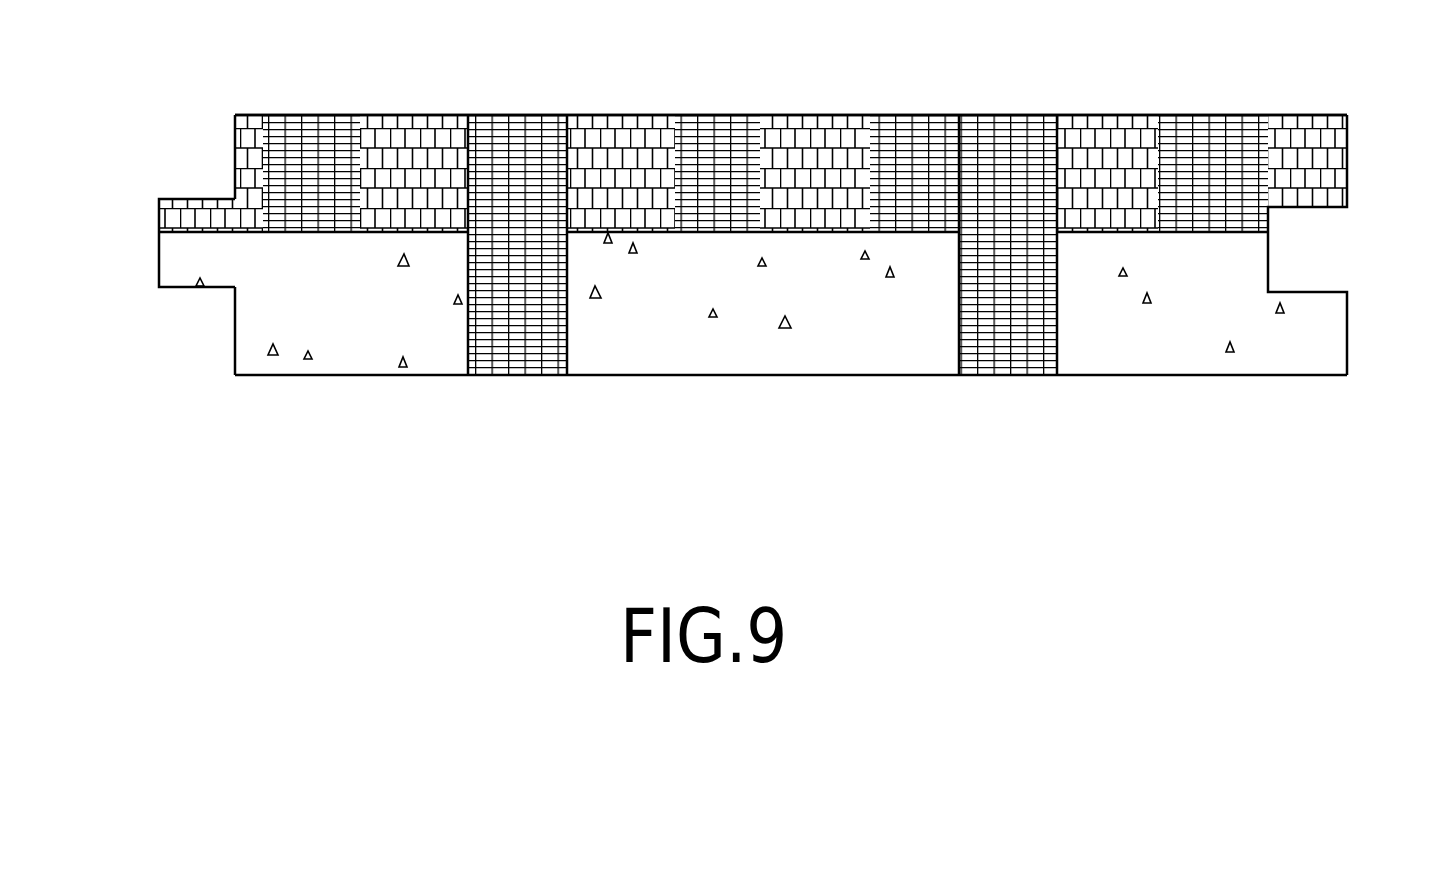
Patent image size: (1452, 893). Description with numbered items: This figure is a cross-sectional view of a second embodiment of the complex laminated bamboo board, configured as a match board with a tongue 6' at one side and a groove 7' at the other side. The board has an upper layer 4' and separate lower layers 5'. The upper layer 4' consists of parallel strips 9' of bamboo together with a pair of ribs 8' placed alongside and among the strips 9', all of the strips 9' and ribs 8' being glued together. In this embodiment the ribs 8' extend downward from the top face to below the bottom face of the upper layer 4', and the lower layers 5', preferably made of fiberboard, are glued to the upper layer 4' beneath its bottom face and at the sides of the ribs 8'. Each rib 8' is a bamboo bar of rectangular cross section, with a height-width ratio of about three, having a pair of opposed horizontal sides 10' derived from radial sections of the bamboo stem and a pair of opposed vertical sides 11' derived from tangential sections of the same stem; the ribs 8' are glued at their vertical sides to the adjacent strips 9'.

The upper layer 4' is at (753, 205).
The lower layer 5' is at (189, 354).
The tongue 6' is at (166, 211).
The groove 7' is at (1350, 245).
The rib 8' is at (514, 297).
The strip 9' is at (753, 122).
The horizontal side 10' is at (791, 74).
The vertical side 11' is at (1036, 300).